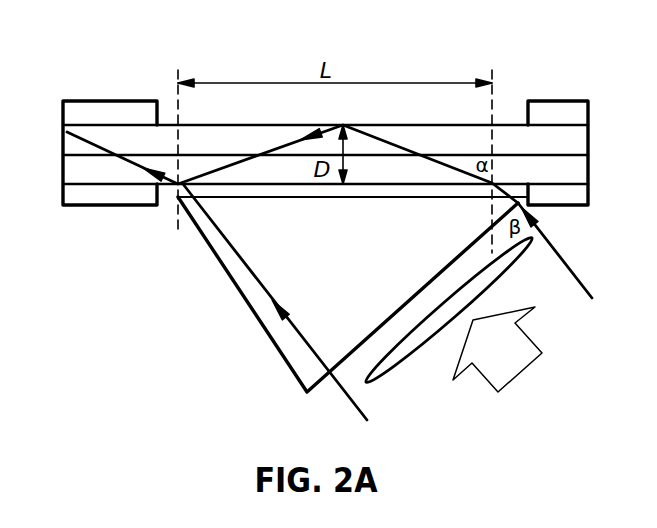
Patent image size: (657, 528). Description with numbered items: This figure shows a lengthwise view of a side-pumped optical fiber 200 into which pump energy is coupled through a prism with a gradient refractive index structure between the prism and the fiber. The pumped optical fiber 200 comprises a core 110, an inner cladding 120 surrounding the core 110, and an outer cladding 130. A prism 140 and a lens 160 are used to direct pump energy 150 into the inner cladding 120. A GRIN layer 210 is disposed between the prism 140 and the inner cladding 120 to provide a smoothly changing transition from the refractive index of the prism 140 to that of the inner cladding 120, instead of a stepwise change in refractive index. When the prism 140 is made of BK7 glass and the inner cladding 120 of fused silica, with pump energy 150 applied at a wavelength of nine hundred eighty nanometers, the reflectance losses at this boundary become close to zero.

The core 110 is at (573, 150).
The inner cladding 120 is at (470, 138).
The outer cladding 130 is at (131, 112).
The prism 140 is at (278, 332).
The pump energy 150 is at (498, 370).
The lens 160 is at (388, 362).
The pumped optical fiber 200 is at (308, 33).
The GRIN layer 210 is at (239, 190).